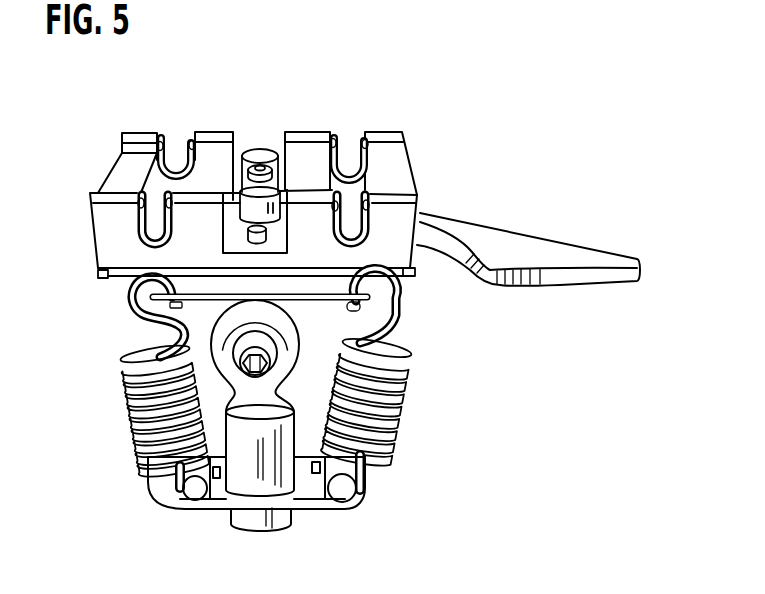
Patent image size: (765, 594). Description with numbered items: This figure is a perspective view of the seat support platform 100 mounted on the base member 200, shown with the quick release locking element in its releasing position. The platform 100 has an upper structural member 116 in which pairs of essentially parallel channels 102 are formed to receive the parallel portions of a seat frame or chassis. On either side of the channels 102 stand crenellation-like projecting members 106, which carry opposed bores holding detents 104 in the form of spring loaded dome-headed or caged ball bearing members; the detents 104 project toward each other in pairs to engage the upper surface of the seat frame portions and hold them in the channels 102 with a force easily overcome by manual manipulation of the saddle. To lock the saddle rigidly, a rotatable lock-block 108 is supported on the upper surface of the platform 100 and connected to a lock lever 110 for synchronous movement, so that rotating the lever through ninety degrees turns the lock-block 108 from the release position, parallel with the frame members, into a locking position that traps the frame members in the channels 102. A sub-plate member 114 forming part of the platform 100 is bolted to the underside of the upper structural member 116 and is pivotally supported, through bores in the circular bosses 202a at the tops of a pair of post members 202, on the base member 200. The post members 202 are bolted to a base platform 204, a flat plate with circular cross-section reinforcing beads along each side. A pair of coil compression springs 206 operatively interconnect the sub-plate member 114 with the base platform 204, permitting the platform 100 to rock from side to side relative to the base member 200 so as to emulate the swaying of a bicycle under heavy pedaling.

The seat support platform 100 is at (88, 247).
The channels 102 is at (344, 158).
The detents 104 is at (163, 145).
The crenellation-like projecting members 106 is at (143, 132).
The lock-block 108 is at (335, 203).
The lock lever 110 is at (579, 252).
The sub-plate member 114 is at (412, 280).
The upper structural member 116 is at (103, 222).
The base member 200 is at (128, 466).
The post members 202 is at (248, 478).
The circular bosses 202a is at (150, 328).
The base platform 204 is at (312, 494).
The coil compression springs 206 is at (137, 408).